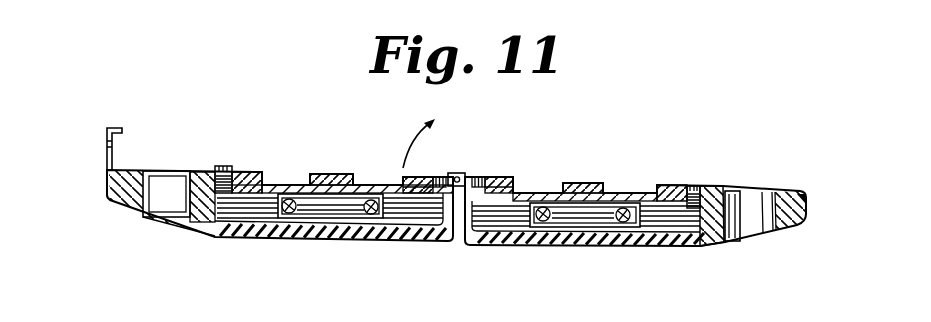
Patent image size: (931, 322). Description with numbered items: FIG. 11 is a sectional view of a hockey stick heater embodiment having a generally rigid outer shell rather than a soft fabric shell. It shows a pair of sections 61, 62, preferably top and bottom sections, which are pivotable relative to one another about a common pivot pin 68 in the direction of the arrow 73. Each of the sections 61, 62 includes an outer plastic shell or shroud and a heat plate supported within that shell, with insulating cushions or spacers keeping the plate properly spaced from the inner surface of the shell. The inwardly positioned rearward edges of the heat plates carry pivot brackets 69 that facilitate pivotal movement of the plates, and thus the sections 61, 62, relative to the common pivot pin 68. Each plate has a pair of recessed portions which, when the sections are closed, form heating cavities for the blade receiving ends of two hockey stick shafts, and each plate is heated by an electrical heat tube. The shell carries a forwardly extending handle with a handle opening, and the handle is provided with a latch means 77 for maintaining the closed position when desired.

The section 61 is at (234, 170).
The section 62 is at (510, 169).
The pivot pin 68 is at (473, 176).
The pivot bracket 69 is at (455, 173).
The arrow 73 is at (417, 108).
The latch means 77 is at (107, 148).